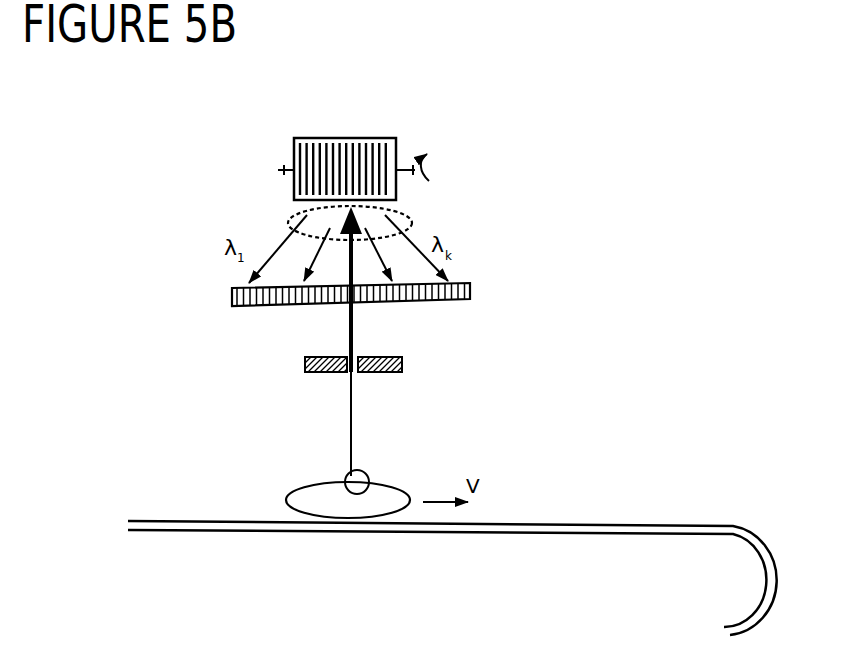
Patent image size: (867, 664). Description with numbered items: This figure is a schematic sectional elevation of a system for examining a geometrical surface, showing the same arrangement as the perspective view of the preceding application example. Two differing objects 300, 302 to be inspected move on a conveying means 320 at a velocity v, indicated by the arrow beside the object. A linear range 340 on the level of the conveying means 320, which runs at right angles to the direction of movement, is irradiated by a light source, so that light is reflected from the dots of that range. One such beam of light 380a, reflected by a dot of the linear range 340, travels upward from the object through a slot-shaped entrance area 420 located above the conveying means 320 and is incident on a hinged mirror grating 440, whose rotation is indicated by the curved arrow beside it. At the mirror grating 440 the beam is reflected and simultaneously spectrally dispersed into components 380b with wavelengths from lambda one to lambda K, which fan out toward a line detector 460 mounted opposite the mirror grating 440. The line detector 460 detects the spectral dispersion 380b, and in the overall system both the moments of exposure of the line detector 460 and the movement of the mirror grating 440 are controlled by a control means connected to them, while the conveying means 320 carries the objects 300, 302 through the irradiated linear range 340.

The mirror grating 440 is at (397, 139).
The spectral dispersion 380b is at (403, 224).
The line detector 460 is at (470, 288).
The slot-shaped entrance area 420 is at (366, 358).
The beam of light 380a is at (356, 427).
The linear range 340 is at (370, 476).
The object 300 is at (436, 476).
The object 302 is at (385, 490).
The conveying means 320 is at (612, 524).